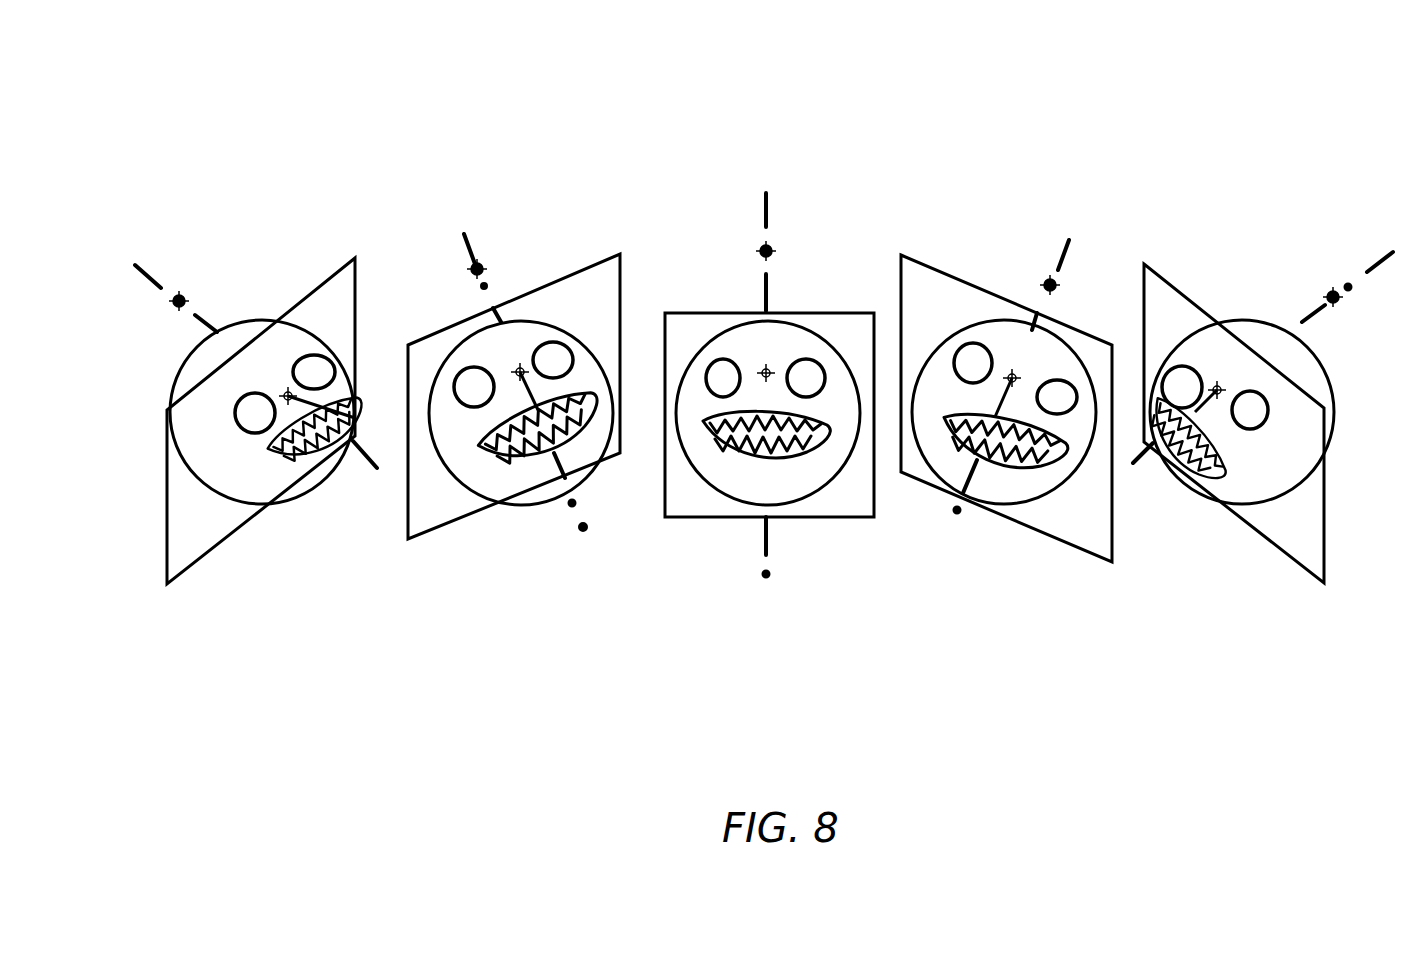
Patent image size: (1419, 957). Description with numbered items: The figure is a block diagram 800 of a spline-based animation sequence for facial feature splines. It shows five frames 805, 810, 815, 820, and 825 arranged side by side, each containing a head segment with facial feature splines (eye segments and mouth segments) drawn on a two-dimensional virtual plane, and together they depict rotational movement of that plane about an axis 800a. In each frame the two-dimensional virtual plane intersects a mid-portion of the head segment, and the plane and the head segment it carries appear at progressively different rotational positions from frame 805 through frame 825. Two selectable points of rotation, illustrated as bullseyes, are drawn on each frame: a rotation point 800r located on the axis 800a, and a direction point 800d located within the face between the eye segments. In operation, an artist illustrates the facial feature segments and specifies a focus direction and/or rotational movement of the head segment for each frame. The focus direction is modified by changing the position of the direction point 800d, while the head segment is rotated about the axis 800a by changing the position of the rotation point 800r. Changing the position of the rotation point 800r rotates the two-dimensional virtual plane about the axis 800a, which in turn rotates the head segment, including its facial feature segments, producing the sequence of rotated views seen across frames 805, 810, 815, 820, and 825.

The block diagram 800 is at (1321, 100).
The frame 805 is at (253, 627).
The frame 810 is at (517, 627).
The frame 815 is at (794, 627).
The frame 820 is at (1039, 627).
The frame 825 is at (1267, 627).
The axis 800a is at (754, 365).
The rotation point 800r is at (180, 300).
The direction point 800d is at (288, 394).